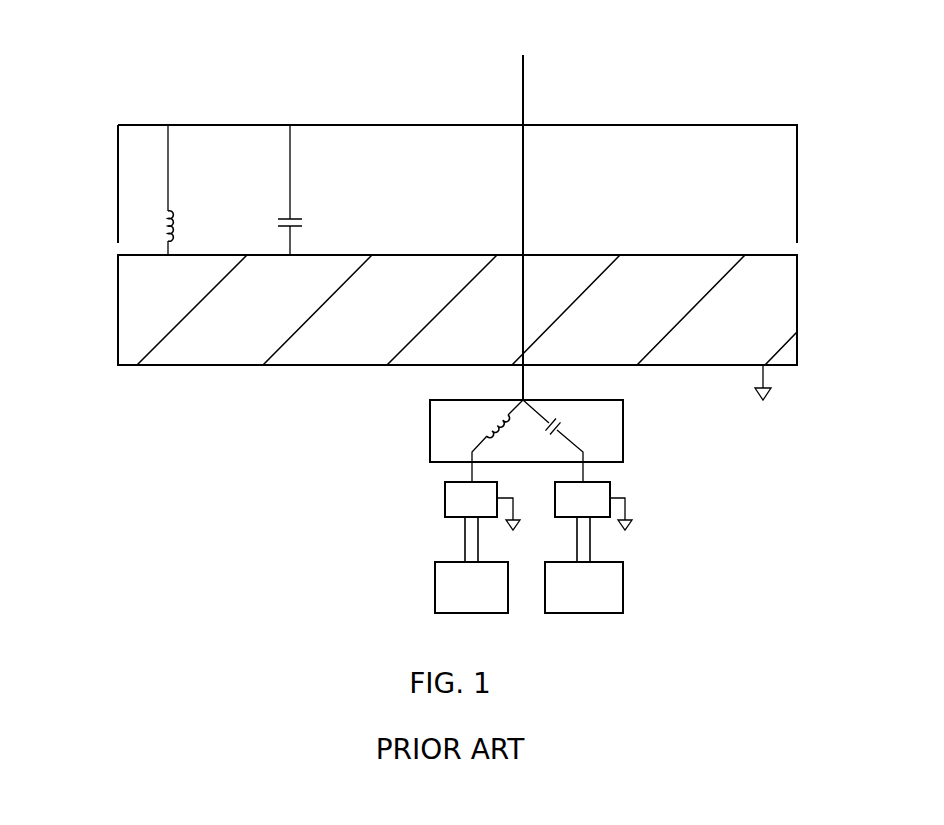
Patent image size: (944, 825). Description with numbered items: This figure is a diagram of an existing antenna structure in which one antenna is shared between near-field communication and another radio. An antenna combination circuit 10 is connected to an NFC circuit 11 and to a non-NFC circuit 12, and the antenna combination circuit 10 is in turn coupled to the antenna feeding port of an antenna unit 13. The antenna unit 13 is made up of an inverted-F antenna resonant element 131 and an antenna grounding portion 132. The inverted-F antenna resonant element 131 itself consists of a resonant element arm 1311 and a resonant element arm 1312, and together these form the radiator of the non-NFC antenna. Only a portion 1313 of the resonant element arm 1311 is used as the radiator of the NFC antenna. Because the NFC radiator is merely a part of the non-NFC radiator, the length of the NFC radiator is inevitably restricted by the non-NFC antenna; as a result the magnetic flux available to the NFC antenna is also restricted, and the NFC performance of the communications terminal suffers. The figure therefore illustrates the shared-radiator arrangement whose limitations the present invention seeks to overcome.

The antenna combination circuit 10 is at (412, 521).
The NFC circuit 11 is at (435, 588).
The non-NFC circuit 12 is at (623, 588).
The antenna unit 13 is at (449, 207).
The inverted-F antenna resonant element 131 is at (96, 125).
The antenna grounding portion 132 is at (118, 327).
The resonant element arm 1311 is at (523, 115).
The resonant element arm 1312 is at (797, 118).
The portion of the resonant element arm 1313 is at (523, 115).